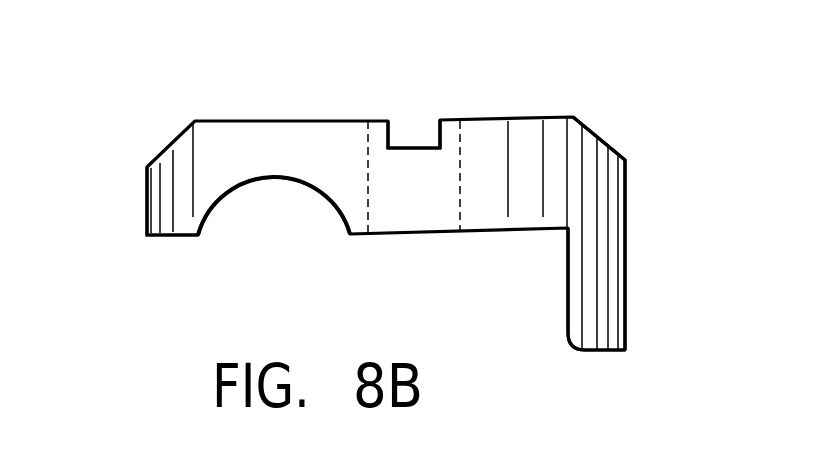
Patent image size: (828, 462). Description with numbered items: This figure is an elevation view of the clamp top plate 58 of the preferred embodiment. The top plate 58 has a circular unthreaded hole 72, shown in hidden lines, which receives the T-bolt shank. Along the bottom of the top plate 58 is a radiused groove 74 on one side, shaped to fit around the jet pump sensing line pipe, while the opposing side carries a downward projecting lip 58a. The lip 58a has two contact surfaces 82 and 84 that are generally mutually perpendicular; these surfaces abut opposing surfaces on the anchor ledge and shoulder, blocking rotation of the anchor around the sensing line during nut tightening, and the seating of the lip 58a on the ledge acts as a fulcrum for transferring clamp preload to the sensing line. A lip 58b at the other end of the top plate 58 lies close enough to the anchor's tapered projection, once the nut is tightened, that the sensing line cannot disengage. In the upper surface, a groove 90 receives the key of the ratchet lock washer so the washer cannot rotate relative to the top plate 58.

The top plate 58 is at (148, 125).
The downward projecting lip 58a is at (628, 308).
The lip of top plate 58b is at (162, 237).
The groove 90 is at (412, 147).
The radiused groove 74 is at (247, 190).
The circular unthreaded hole 72 is at (458, 192).
The contact surface 84 is at (568, 303).
The contact surface 82 is at (592, 352).